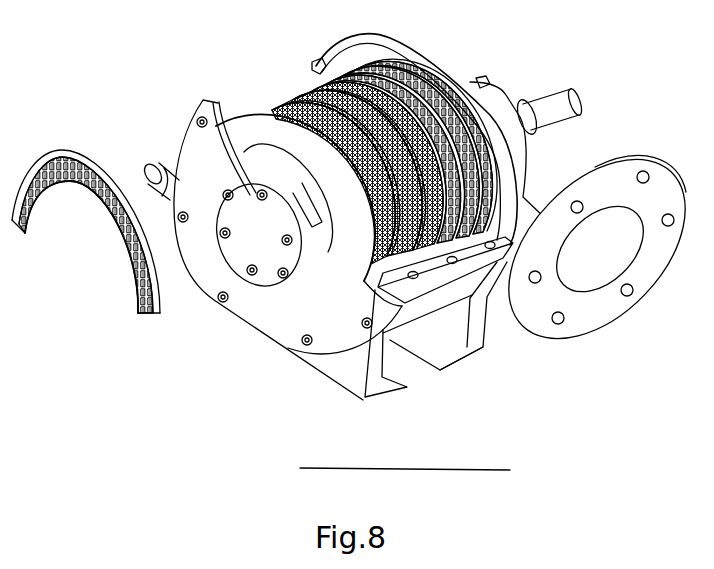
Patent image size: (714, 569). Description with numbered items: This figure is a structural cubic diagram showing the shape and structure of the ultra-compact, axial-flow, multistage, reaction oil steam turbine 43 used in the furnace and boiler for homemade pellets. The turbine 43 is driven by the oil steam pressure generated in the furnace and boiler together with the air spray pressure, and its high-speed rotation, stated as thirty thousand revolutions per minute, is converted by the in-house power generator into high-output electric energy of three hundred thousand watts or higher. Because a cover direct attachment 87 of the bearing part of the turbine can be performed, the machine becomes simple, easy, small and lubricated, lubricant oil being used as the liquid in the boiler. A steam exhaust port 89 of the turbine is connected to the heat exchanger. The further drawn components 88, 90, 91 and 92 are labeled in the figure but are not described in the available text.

The ultra-compact axial-flow, multistage, reaction oil steam turbine 43 is at (405, 452).
The cover direct attachment 87 is at (258, 234).
The terminal fitting 88 is at (154, 163).
The steam exhaust port 89 is at (594, 249).
The stator segment 90 is at (86, 231).
The stator winding 91 is at (270, 107).
The shaft 92 is at (551, 102).